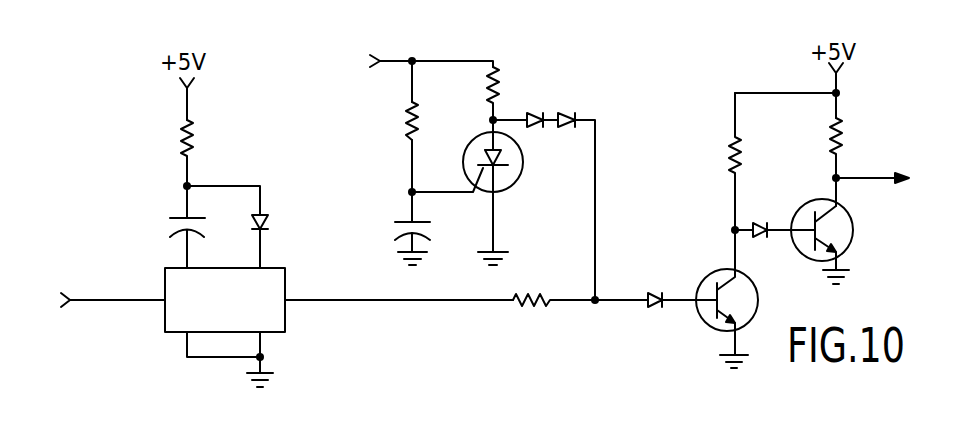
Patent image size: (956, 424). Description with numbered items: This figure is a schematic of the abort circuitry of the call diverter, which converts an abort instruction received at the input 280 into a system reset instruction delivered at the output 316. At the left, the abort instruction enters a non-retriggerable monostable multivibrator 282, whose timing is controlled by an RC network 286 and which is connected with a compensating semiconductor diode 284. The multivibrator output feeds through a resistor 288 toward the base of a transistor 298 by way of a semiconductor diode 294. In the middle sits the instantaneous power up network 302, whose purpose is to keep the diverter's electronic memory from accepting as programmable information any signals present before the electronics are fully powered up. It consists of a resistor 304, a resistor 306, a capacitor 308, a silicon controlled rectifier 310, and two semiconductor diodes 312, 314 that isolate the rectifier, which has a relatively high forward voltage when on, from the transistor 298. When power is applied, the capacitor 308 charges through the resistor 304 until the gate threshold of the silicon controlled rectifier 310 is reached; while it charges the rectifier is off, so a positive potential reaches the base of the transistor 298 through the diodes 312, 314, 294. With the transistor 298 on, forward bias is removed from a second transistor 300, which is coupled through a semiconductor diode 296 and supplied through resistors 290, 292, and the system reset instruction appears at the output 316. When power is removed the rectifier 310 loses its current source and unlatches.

The abort instruction input 280 is at (85, 303).
The non-retriggerable monostable multivibrator 282 is at (225, 300).
The compensating semiconductor diode 284 is at (284, 216).
The RC network 286 is at (180, 155).
The resistor 288 is at (511, 305).
The resistor 290 is at (727, 172).
The resistor 292 is at (832, 157).
The semiconductor diode 294 is at (683, 297).
The semiconductor diode 296 is at (771, 226).
The transistor 298 is at (750, 305).
The transistor 300 is at (834, 233).
The instantaneous power up network 302 is at (575, 70).
The resistor 304 is at (405, 131).
The resistor 306 is at (487, 97).
The capacitor 308 is at (388, 236).
The silicon controlled rectifier 310 is at (512, 192).
The semiconductor diode 312 is at (531, 114).
The semiconductor diode 314 is at (590, 106).
The system reset output 316 is at (869, 185).